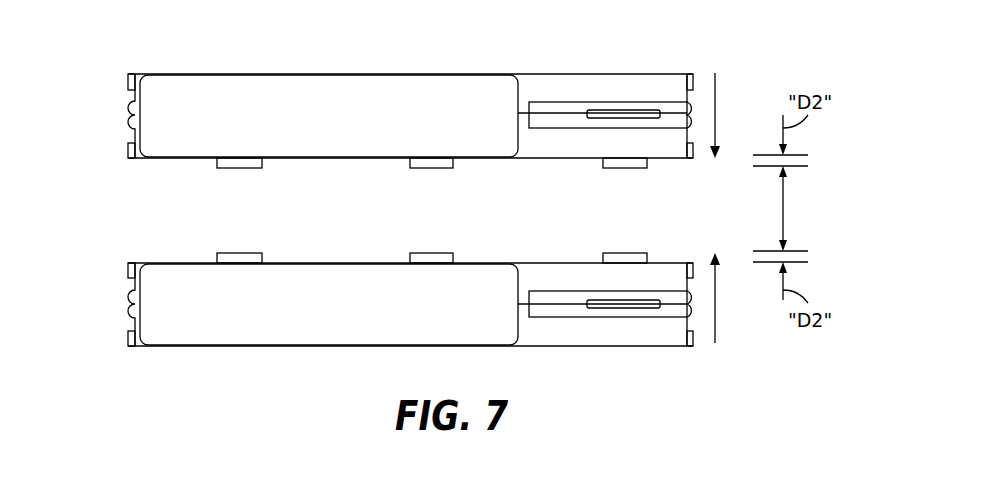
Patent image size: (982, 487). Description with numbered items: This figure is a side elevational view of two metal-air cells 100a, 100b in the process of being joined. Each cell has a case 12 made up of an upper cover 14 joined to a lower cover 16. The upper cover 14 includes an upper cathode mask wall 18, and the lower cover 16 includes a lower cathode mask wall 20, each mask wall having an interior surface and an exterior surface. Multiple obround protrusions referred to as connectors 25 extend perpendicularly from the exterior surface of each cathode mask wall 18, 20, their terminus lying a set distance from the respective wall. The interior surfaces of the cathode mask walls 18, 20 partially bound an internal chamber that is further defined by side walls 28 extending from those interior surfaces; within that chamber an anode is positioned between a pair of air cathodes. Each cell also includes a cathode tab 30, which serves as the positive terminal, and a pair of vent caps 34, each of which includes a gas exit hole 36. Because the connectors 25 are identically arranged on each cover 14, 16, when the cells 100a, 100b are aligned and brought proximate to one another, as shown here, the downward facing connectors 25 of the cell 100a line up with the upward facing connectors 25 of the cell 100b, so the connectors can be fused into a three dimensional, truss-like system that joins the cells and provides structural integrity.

The case 12 is at (679, 73).
The upper cover 14 is at (131, 263).
The lower cover 16 is at (682, 160).
The upper cathode mask wall 18 is at (140, 73).
The lower cathode mask wall 20 is at (130, 160).
The connectors 25 is at (239, 168).
The side walls 28 is at (573, 154).
The cathode tab 30 is at (600, 110).
The vent caps 34 is at (234, 130).
The gas exit hole 36 is at (327, 113).
The metal-air cell 100a is at (127, 105).
The metal-air cell 100b is at (127, 316).